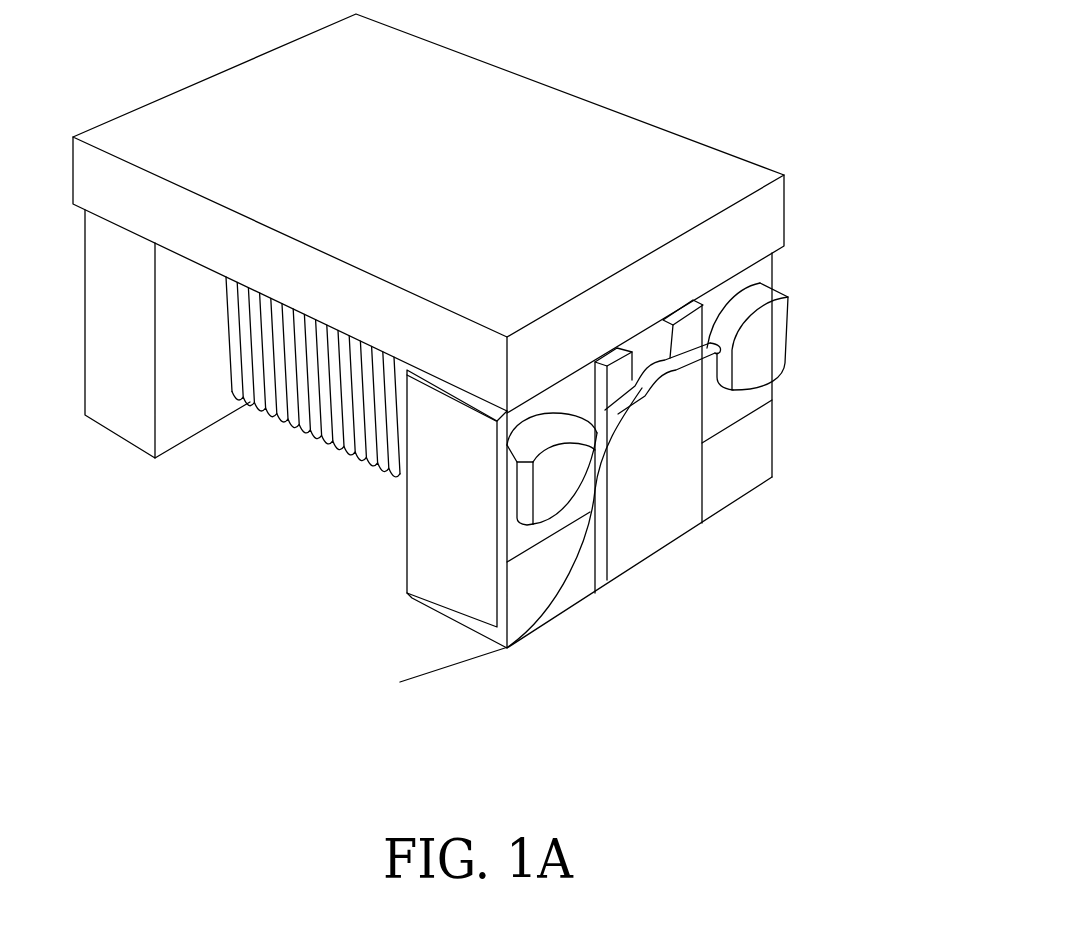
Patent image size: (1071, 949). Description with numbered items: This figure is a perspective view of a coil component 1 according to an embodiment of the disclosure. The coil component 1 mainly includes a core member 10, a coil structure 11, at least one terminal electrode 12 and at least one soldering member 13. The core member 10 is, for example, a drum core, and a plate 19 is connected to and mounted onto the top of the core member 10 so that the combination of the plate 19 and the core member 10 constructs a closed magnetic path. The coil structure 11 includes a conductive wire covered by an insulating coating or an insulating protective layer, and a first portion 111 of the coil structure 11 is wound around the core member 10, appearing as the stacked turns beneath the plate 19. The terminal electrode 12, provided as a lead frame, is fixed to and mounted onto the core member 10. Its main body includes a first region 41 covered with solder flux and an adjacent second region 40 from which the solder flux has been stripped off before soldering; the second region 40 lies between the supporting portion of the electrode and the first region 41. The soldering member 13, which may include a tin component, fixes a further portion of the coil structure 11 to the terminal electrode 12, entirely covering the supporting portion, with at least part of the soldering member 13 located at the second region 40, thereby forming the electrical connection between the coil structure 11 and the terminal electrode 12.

The coil component 1 is at (737, 66).
The plate 19 is at (507, 93).
The core member 10 is at (241, 386).
The first portion of the coil structure 111 is at (370, 470).
The coil structure 11 is at (367, 592).
The first region 41 is at (717, 487).
The second region 40 is at (522, 532).
The soldering member 13 is at (770, 340).
The terminal electrode 12 is at (747, 445).